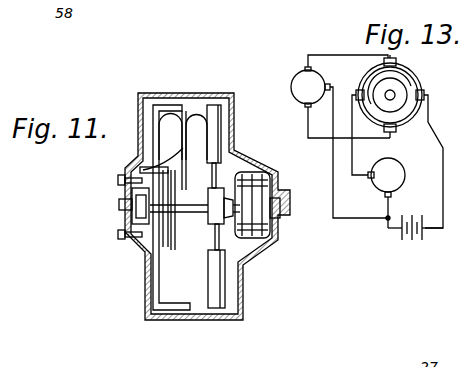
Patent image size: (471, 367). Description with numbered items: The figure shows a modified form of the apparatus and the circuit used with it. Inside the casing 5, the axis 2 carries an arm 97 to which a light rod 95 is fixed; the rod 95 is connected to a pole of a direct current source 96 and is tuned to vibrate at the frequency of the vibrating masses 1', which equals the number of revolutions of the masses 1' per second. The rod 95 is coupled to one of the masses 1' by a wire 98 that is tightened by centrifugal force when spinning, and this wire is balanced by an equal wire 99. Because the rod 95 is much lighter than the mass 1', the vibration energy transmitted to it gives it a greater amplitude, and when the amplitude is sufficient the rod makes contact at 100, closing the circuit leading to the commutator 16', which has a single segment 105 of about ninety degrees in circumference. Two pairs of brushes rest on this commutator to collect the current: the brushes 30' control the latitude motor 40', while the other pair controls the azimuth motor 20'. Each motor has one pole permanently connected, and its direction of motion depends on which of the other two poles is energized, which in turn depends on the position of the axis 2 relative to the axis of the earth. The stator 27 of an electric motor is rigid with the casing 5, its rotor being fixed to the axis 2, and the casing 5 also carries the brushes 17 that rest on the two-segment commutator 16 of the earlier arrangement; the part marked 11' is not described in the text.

In FIG. 11, the vibrating mass 1' is at (241, 221).
In FIG. 11, the axis 2 is at (194, 213).
In FIG. 11, the casing 5 is at (232, 94).
In FIG. 13, the casing 5 is at (423, 111).
In FIG. 11, the commutator 16' is at (113, 206).
In FIG. 11, the stator 27 is at (267, 170).
In FIG. 11, the brushes 30' is at (107, 222).
In FIG. 13, the brushes 30' is at (405, 99).
In FIG. 11, the light rod 95 is at (184, 138).
In FIG. 11, the arm 97 is at (166, 105).
In FIG. 11, the wire 98 is at (197, 114).
In FIG. 11, the wire 99 is at (163, 133).
In FIG. 11, the contact 100 is at (155, 157).
In FIG. 13, the latitude motor 40' is at (336, 130).
In FIG. 13, the single segment 105 is at (375, 79).
In FIG. 13, the pole 11' is at (353, 82).
In FIG. 13, the commutator 16 is at (408, 90).
In FIG. 13, the brushes 17 is at (425, 93).
In FIG. 13, the azimuth motor 20' is at (396, 193).
In FIG. 13, the direct current source 96 is at (397, 237).